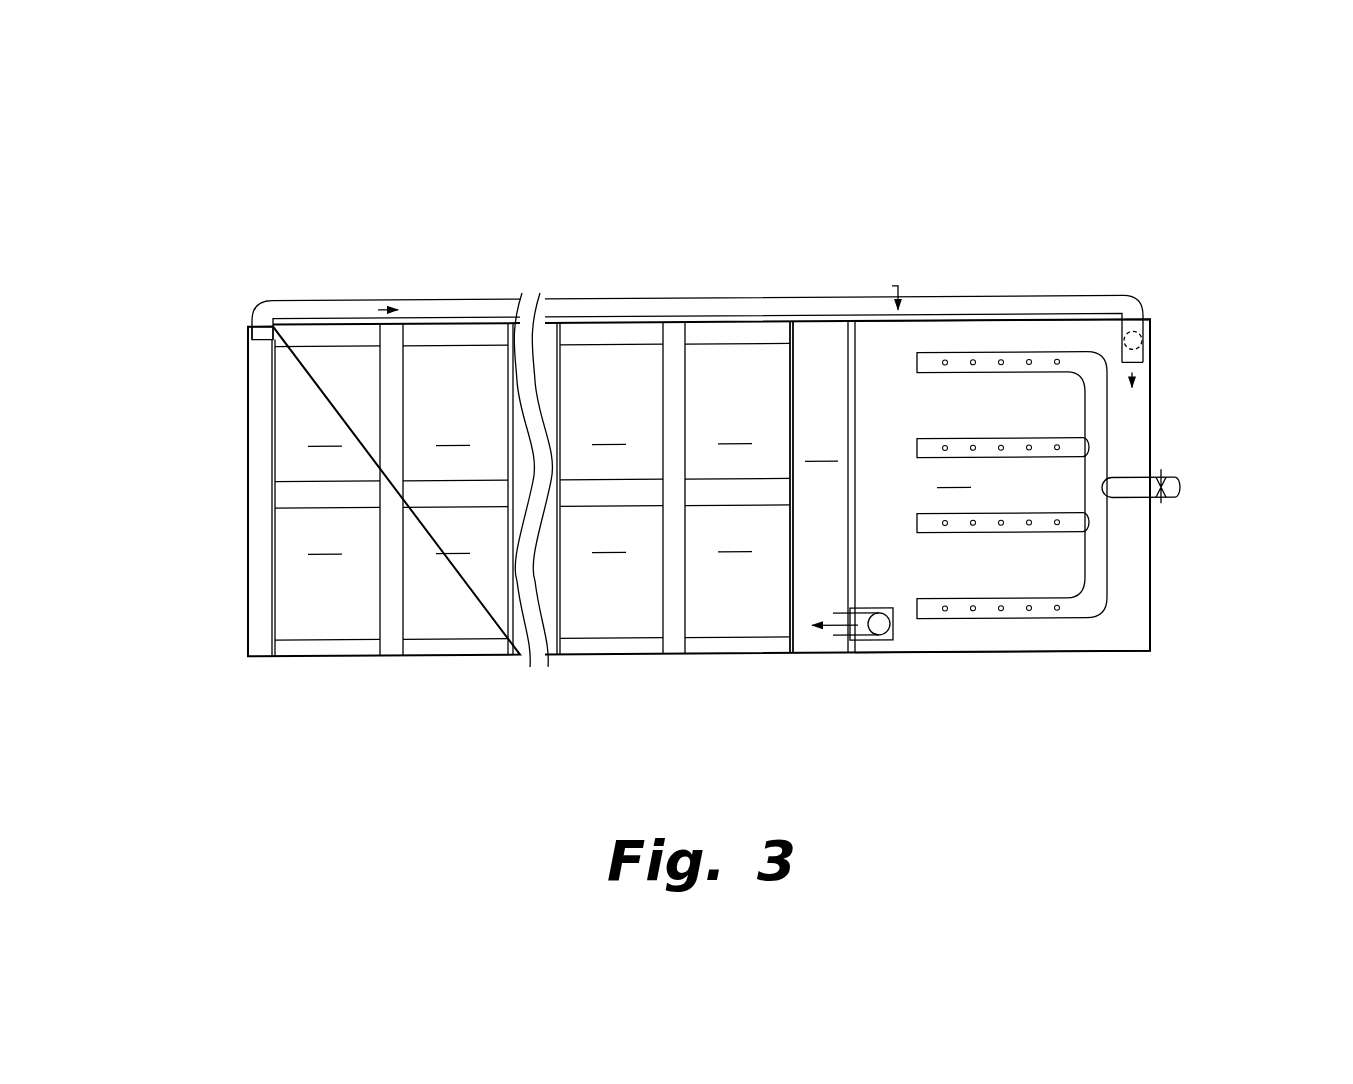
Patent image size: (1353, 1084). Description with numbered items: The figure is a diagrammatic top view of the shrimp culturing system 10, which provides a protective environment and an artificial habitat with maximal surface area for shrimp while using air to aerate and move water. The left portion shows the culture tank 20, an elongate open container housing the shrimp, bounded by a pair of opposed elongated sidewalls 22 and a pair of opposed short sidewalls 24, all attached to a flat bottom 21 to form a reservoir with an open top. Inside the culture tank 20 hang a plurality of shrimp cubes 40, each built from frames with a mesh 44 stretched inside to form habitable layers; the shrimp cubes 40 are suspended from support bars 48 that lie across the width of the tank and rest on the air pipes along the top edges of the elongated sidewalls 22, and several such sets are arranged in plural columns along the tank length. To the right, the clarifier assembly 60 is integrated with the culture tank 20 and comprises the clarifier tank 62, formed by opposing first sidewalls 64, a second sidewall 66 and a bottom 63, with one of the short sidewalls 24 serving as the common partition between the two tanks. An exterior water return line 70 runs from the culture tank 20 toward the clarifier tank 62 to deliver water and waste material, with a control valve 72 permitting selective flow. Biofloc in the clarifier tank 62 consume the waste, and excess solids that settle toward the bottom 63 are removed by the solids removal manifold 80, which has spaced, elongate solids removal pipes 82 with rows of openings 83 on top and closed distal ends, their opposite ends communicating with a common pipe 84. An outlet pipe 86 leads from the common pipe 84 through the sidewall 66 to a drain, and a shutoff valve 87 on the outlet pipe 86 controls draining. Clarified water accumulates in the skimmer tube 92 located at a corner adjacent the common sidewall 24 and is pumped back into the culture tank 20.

The shrimp culturing system 10 is at (1178, 138).
The culture tank 20 is at (218, 504).
The flat bottom 21 is at (821, 448).
The elongated sidewalls 22 is at (460, 330).
The short sidewalls 24 is at (248, 572).
The shrimp cube 40 is at (733, 368).
The mesh 44 is at (532, 491).
The support bars 48 is at (793, 521).
The clarifier assembly 60 is at (1210, 596).
The clarifier tank 62 is at (1152, 680).
The bottom 63 is at (954, 474).
The first sidewalls 64 is at (1010, 323).
The second sidewalls 66 is at (1152, 533).
The water return line 70 is at (825, 298).
The control valve 72 is at (898, 287).
The solids removal manifold 80 is at (1150, 602).
The solids removal pipes 82 is at (1063, 439).
The openings 83 is at (945, 447).
The common pipe 84 is at (1107, 411).
The outlet pipe 86 is at (1175, 500).
The shutoff valve 87 is at (1162, 468).
The skimmer tube 92 is at (893, 628).